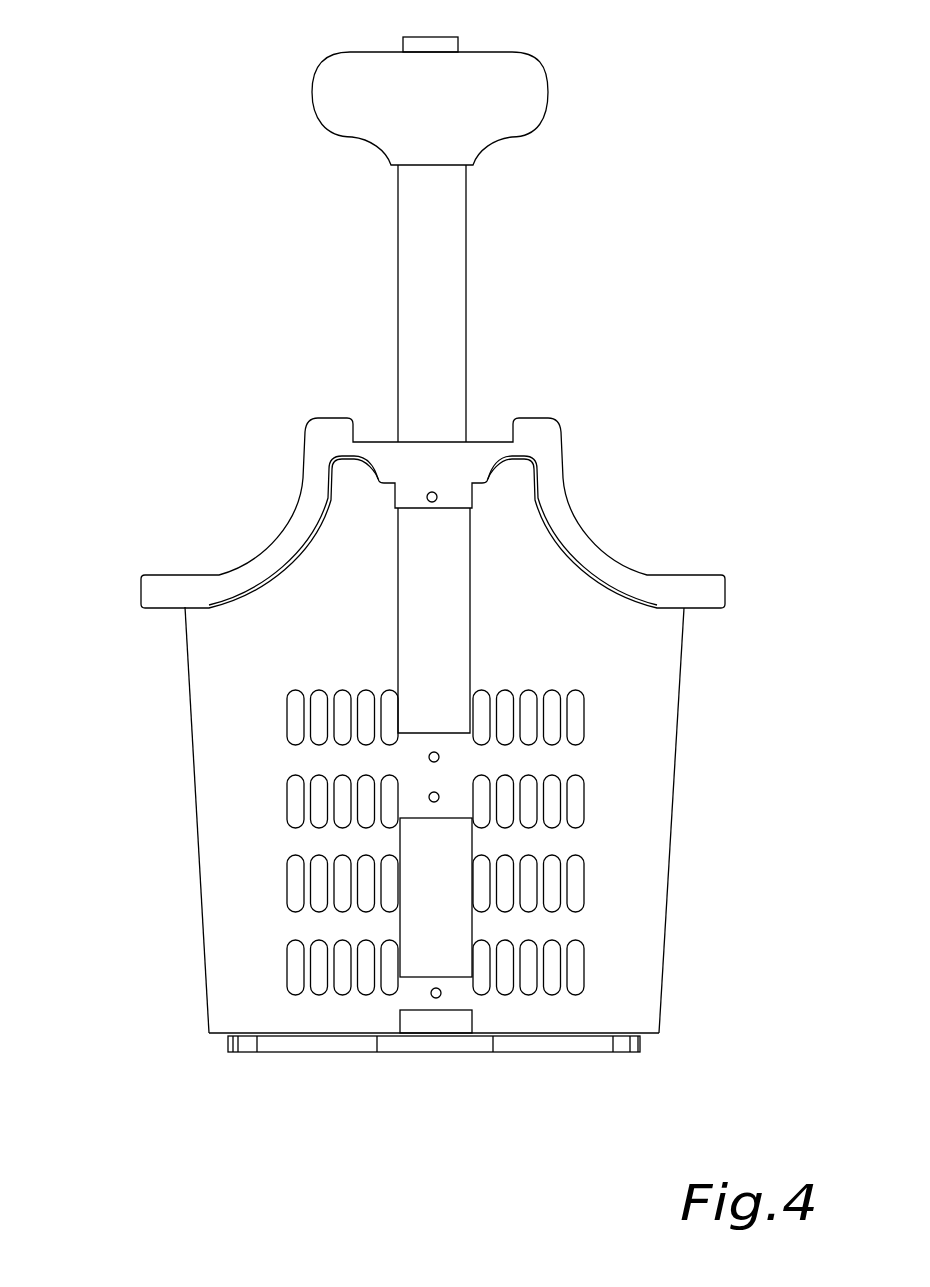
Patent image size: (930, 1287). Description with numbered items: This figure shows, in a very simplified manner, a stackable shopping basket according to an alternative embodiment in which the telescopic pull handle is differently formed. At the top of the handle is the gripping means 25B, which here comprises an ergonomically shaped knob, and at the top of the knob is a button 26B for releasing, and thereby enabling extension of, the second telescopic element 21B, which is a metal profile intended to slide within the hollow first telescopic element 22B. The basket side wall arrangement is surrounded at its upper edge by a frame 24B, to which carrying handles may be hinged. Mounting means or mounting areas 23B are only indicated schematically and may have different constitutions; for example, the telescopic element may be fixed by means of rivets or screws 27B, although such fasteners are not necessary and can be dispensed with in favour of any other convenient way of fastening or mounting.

The second telescopic element 21B is at (447, 297).
The first telescopic element 22B is at (446, 595).
The mounting means 23B is at (389, 460).
The frame 24B is at (153, 590).
The gripping means 25B is at (550, 88).
The button 26B is at (446, 37).
The screws 27B is at (437, 493).